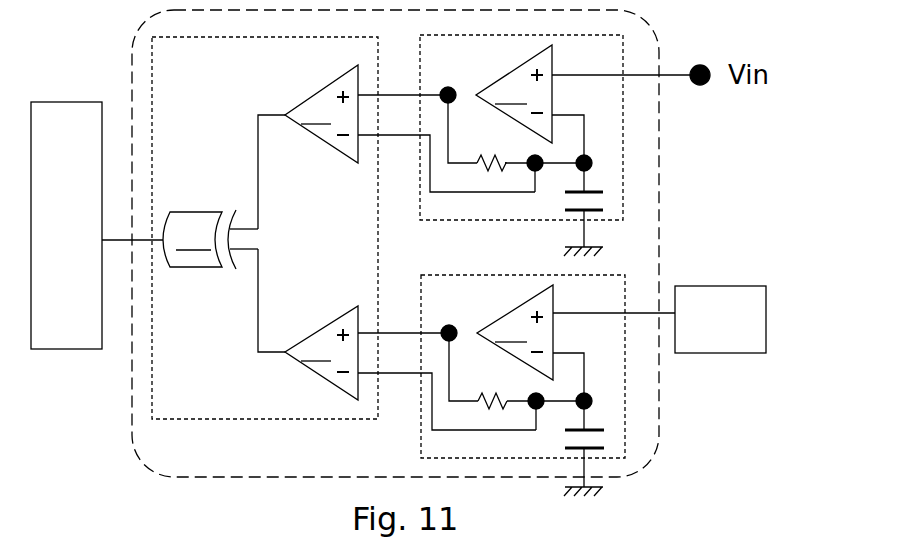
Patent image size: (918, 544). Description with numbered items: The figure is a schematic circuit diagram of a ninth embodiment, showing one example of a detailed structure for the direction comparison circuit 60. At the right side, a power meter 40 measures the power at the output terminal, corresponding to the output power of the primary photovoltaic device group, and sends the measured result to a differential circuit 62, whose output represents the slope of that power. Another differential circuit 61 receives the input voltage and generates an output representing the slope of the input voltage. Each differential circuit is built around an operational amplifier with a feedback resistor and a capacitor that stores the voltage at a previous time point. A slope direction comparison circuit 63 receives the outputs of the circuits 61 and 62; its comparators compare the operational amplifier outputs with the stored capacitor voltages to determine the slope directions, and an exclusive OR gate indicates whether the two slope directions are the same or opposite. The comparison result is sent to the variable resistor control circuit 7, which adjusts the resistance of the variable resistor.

The variable resistor control circuit 7 is at (68, 349).
The power meter 40 is at (708, 286).
The direction comparison circuit 60 is at (659, 418).
The differential circuit 61 is at (464, 71).
The differential circuit 62 is at (464, 309).
The slope direction comparison circuit 63 is at (194, 71).